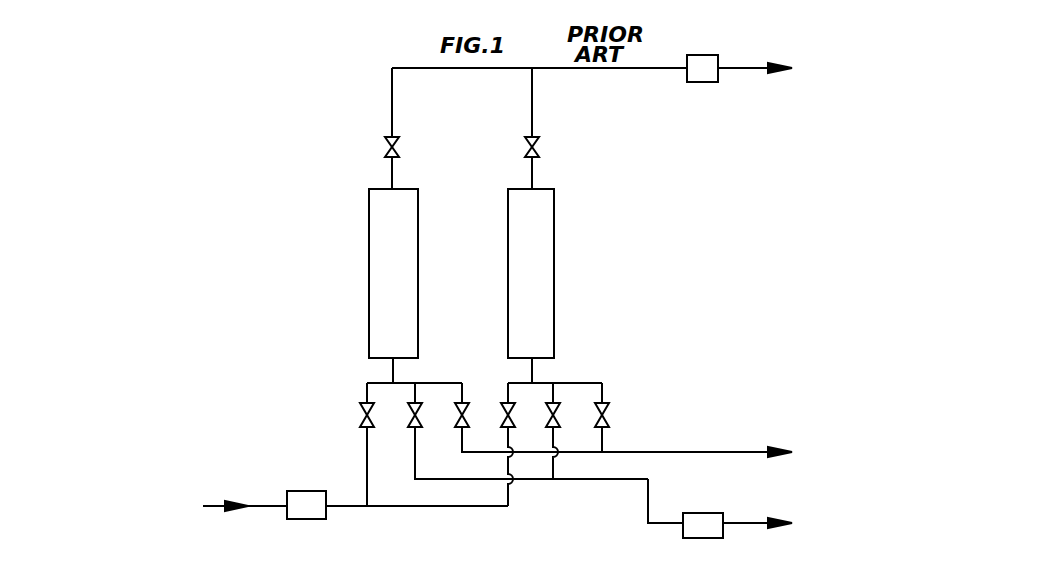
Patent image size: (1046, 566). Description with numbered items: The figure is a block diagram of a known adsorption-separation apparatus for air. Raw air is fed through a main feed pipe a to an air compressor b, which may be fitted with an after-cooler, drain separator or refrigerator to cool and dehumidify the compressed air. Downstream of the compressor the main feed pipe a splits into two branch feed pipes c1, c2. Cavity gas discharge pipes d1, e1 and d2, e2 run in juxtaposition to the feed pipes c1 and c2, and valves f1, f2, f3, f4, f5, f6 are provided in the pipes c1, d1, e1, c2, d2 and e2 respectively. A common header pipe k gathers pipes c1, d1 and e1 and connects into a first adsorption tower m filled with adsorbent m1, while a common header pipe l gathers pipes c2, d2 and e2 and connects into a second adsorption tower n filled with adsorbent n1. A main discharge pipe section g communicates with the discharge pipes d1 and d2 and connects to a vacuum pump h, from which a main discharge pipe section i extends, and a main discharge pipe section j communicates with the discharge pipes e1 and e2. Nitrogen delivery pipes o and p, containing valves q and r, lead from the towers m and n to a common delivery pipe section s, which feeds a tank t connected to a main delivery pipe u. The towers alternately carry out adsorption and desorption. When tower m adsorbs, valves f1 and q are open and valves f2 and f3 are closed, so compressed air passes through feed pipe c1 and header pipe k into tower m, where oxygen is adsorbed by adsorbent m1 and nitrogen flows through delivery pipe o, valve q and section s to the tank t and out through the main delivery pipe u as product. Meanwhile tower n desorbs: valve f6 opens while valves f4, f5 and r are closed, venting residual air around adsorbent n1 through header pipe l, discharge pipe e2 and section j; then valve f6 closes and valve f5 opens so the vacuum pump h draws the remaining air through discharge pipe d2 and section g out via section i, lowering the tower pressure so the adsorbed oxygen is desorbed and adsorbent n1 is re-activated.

The main feed pipe a is at (263, 506).
The air compressor b is at (302, 491).
The feed pipe c1 is at (367, 478).
The feed pipe c2 is at (508, 492).
The cavity gas discharge pipe d1 is at (415, 465).
The cavity gas discharge pipe d2 is at (553, 465).
The cavity gas discharge pipe e1 is at (463, 446).
The cavity gas discharge pipe e2 is at (603, 446).
The valve f1 is at (362, 415).
The valve f2 is at (410, 415).
The valve f3 is at (457, 415).
The valve f4 is at (503, 415).
The valve f5 is at (548, 415).
The valve f6 is at (597, 415).
The main discharge pipe section g is at (625, 480).
The vacuum pump h is at (703, 513).
The main discharge pipe section i is at (752, 523).
The main discharge pipe section j is at (712, 452).
The common header pipe k is at (393, 377).
The common header pipe l is at (532, 377).
The adsorption tower m is at (418, 255).
The adsorbent m1 is at (400, 302).
The adsorption tower n is at (554, 255).
The adsorbent n1 is at (535, 302).
The N2 gas delivery pipe o is at (392, 178).
The N2 gas delivery pipe p is at (532, 178).
The valve q is at (399, 150).
The valve r is at (539, 150).
The common delivery pipe section s is at (613, 69).
The tank t is at (697, 55).
The main delivery pipe u is at (735, 69).